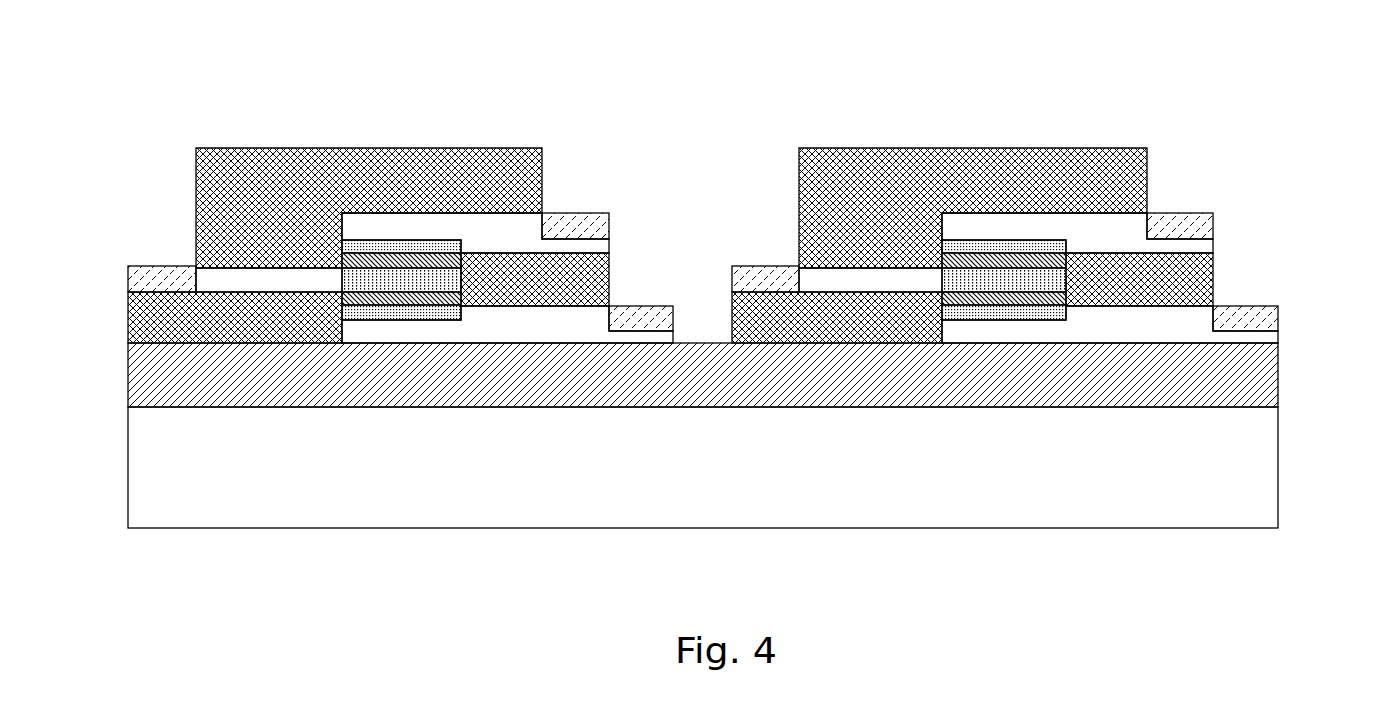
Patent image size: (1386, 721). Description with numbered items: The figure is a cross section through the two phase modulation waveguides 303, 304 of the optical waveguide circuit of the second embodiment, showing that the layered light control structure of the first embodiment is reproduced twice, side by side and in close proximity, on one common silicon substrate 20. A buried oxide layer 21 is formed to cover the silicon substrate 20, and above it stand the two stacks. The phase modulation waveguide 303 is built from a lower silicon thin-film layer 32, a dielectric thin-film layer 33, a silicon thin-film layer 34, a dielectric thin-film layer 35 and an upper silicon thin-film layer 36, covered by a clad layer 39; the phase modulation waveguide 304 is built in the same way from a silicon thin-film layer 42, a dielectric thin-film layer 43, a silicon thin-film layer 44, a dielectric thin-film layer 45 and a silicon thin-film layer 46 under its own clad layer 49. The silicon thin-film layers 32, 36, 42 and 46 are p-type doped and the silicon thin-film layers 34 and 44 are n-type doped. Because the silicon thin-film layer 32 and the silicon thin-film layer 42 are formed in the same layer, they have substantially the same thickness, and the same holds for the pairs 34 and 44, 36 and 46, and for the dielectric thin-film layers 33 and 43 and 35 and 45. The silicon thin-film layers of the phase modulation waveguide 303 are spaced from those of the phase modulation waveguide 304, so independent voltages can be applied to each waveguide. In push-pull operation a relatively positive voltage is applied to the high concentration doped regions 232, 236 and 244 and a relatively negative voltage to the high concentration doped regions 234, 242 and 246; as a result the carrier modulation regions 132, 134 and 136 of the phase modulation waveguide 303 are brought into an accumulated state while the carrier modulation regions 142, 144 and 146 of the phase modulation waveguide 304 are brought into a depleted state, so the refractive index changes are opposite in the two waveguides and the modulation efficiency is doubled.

The silicon substrate 20 is at (1270, 463).
The buried oxide layer 21 is at (1278, 387).
The phase modulation waveguide 303 is at (218, 141).
The phase modulation waveguide 304 is at (1181, 133).
The silicon thin-film layer 32 is at (609, 294).
The dielectric thin-film layer 33 is at (343, 212).
The silicon thin-film layer 34 is at (303, 274).
The dielectric thin-film layer 35 is at (414, 278).
The silicon thin-film layer 36 is at (512, 222).
The clad layer 39 is at (516, 165).
The region (carrier modulation region) 132 is at (430, 315).
The region (carrier modulation region) 134 is at (375, 258).
The region (carrier modulation region) 136 is at (440, 245).
The region (high concentration doped region) 232 is at (660, 304).
The region (high concentration doped region) 234 is at (146, 267).
The region (high concentration doped region) 236 is at (609, 222).
The silicon thin-film layer 42 is at (1213, 294).
The dielectric thin-film layer 43 is at (944, 212).
The silicon thin-film layer 44 is at (855, 275).
The dielectric thin-film layer 45 is at (1018, 278).
The silicon thin-film layer 46 is at (1118, 222).
The clad layer 49 is at (1120, 165).
The region (carrier modulation region) 142 is at (1034, 315).
The region (carrier modulation region) 144 is at (978, 258).
The region (carrier modulation region) 146 is at (1044, 245).
The region (high concentration doped region) 242 is at (1280, 310).
The region (high concentration doped region) 244 is at (748, 267).
The region (high concentration doped region) 246 is at (1213, 222).